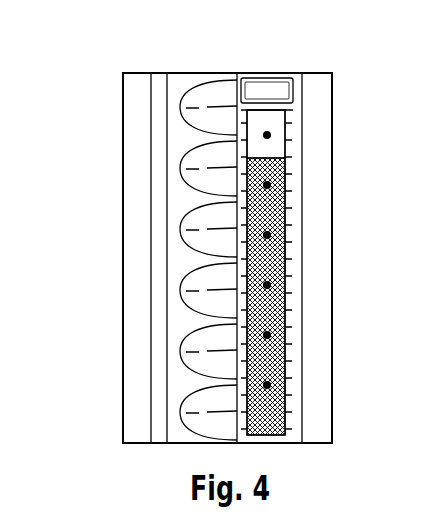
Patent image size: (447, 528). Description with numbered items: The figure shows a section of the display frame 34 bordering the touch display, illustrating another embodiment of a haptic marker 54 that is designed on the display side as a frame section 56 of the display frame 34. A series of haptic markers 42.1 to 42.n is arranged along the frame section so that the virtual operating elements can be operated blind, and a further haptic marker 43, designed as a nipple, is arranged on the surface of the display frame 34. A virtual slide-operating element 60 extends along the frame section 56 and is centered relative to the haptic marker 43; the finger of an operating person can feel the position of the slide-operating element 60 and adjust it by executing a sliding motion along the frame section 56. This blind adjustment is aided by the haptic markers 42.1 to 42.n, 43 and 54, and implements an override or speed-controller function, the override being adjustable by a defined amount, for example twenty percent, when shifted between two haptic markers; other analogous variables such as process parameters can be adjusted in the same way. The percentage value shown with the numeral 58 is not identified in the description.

The display frame 34 is at (142, 190).
The haptic marker 42.1 is at (184, 117).
The haptic marker 42.n is at (188, 428).
The haptic marker 43 is at (190, 262).
The haptic marker 54 is at (237, 250).
The frame section 56 is at (250, 222).
The percentage display 58 is at (265, 73).
The slide-operating element 60 is at (280, 148).